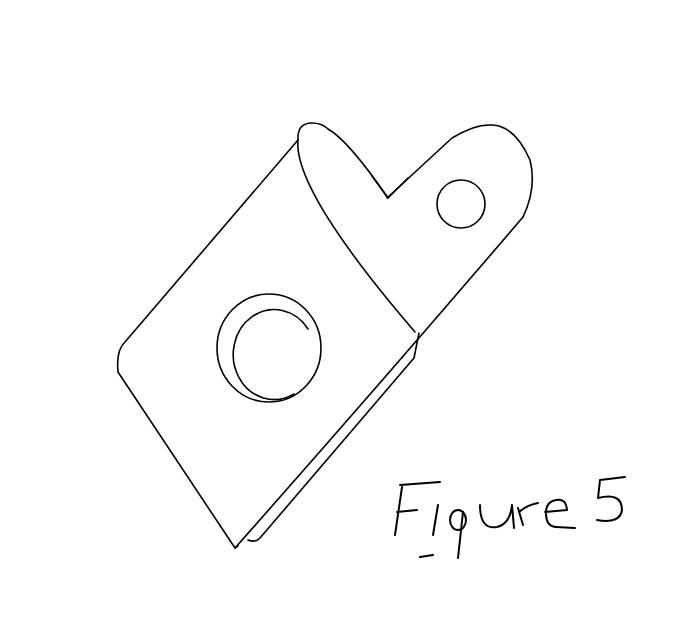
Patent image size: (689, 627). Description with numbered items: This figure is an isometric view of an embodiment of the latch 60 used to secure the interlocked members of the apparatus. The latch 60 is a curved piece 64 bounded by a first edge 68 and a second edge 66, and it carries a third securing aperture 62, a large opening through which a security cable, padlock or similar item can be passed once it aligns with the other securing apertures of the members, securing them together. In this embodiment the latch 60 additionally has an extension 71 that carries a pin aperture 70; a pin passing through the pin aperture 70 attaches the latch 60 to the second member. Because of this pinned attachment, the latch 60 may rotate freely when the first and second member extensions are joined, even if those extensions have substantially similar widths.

The latch 60 is at (105, 88).
The third securing aperture 62 is at (257, 377).
The curved piece 64 is at (147, 387).
The second edge 66 is at (297, 470).
The first edge 68 is at (411, 353).
The pin aperture 70 is at (463, 208).
The extension 71 is at (411, 152).